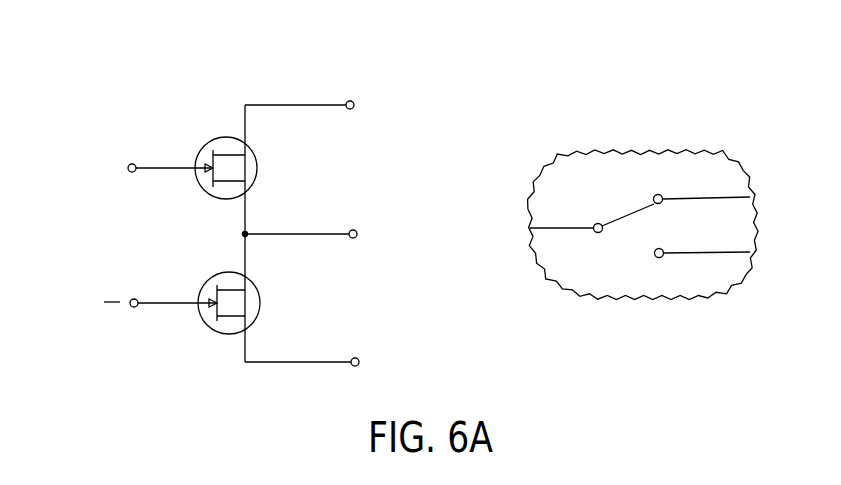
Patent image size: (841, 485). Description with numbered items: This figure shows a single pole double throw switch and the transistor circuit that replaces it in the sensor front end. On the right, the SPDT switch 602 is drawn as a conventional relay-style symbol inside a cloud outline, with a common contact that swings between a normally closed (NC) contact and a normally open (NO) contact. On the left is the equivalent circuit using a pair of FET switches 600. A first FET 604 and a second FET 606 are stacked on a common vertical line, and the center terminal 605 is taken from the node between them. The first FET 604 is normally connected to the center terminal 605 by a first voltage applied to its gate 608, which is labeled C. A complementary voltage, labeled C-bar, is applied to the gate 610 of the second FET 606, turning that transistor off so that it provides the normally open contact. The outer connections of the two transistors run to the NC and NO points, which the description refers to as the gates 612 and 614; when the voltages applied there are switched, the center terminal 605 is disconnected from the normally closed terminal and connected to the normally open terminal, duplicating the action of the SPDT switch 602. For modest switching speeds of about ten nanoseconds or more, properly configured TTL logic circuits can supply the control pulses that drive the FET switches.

The pair of FET switches 600 is at (214, 104).
The SPDT switch 602 is at (752, 149).
The first FET 604 is at (256, 178).
The second FET 606 is at (259, 313).
The gate 608 is at (133, 165).
The gate 610 is at (136, 299).
The gate 612 is at (349, 101).
The center terminal 605 is at (354, 229).
The gate 614 is at (358, 358).